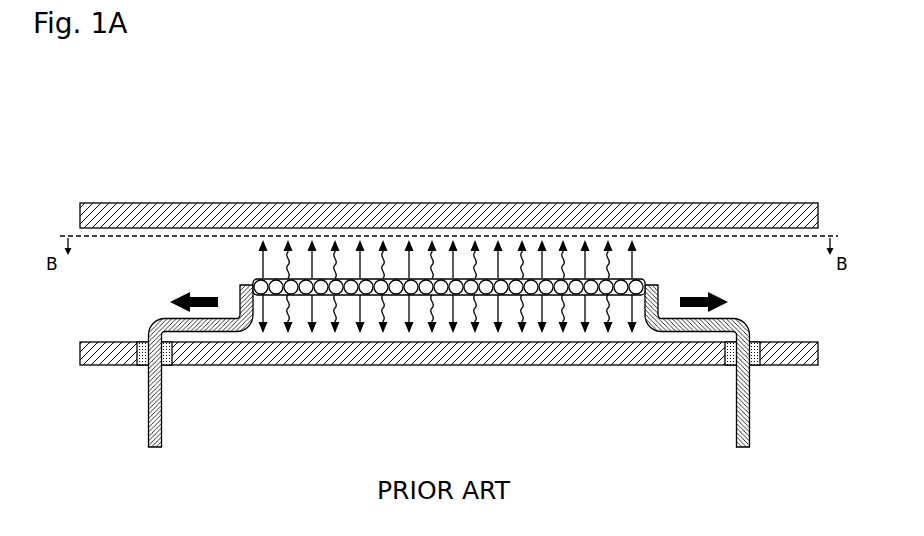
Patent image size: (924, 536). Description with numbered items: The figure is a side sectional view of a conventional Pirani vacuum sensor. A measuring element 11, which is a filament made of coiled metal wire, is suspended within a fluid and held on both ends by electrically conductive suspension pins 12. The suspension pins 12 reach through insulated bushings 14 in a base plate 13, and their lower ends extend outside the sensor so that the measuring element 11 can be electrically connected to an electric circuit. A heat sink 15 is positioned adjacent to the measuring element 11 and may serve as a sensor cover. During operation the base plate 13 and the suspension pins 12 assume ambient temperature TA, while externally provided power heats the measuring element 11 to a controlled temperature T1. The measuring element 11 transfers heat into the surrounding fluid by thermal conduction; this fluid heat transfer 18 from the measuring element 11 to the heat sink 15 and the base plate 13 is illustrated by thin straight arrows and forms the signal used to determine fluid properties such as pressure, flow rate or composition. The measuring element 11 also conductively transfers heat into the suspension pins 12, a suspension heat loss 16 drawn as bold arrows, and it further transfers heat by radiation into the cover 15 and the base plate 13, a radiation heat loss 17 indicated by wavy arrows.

The measuring element 11 is at (648, 278).
The suspension pins 12 is at (229, 334).
The base plate 13 is at (430, 352).
The insulated bushings 14 is at (164, 371).
The heat sink 15 is at (255, 220).
The suspension heat loss 16 is at (188, 290).
The radiation heat loss 17 is at (430, 240).
The fluid heat transfer 18 is at (353, 240).
The controlled temperature T1 is at (540, 240).
The ambient temperature TA is at (733, 322).